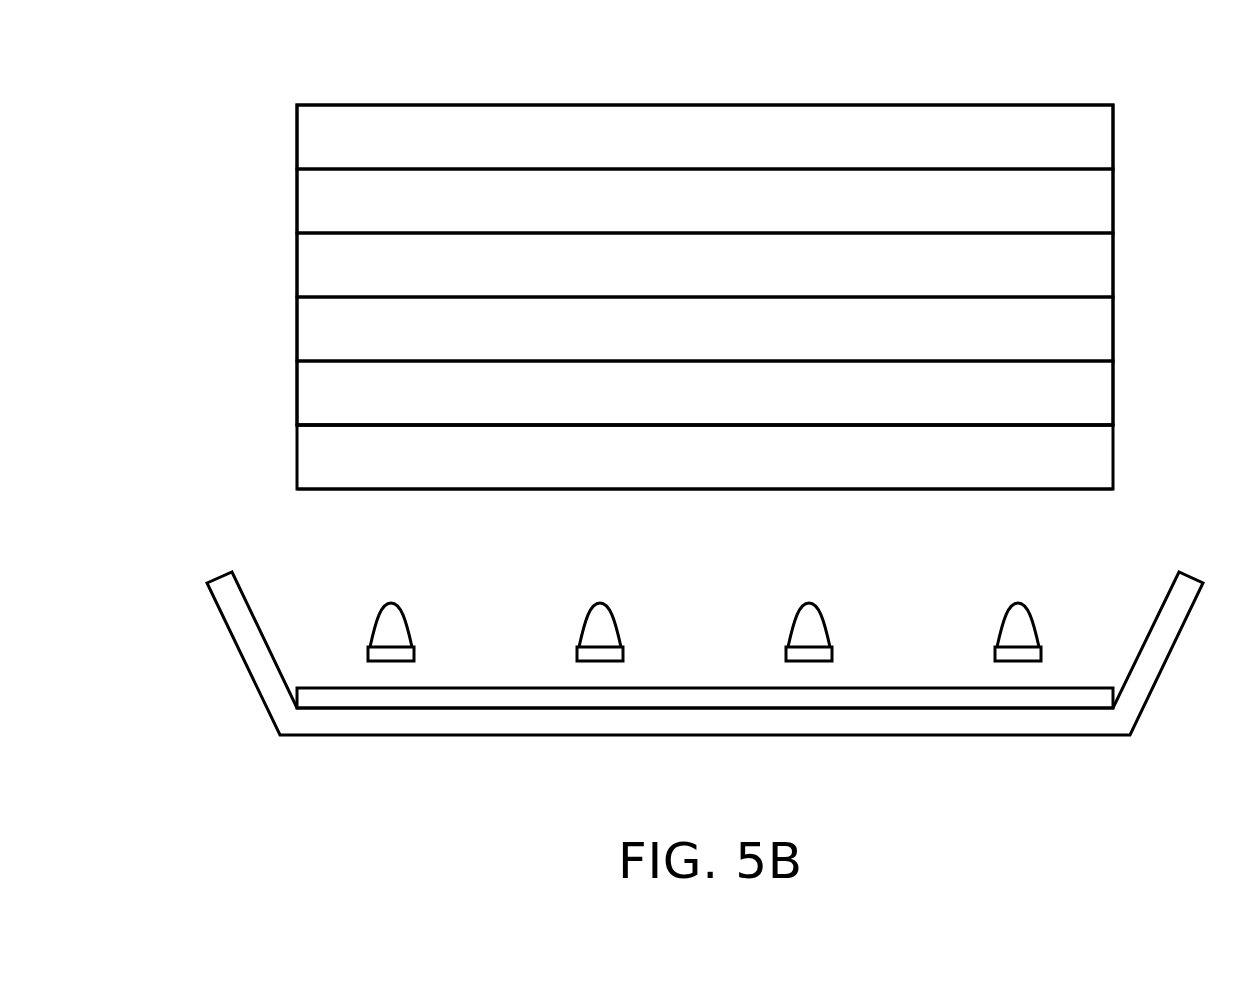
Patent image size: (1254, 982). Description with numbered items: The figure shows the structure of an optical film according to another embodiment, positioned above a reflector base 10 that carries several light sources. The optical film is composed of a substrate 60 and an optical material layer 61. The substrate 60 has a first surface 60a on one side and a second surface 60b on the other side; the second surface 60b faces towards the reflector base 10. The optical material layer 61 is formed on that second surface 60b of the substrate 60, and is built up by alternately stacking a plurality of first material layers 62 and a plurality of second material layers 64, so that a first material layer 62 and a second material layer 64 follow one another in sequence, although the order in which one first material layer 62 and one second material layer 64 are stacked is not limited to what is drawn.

The reflector base 10 is at (1152, 662).
The substrate 60 is at (1100, 461).
The first surface of the substrate 60a is at (322, 492).
The second surface of the substrate 60b is at (326, 420).
The optical material layer 61 is at (268, 105).
The first material layer 62 is at (1100, 141).
The second material layer 64 is at (1100, 205).